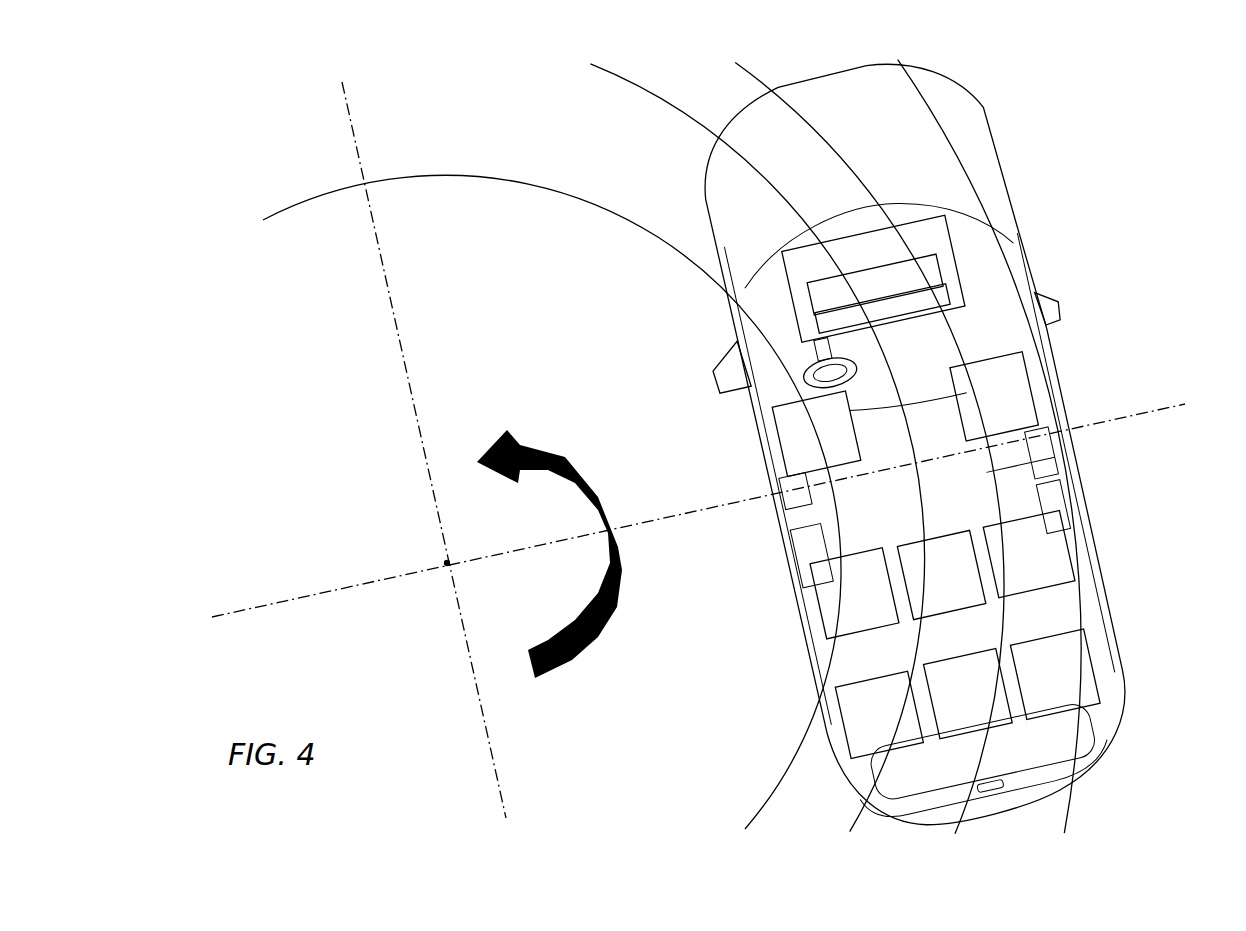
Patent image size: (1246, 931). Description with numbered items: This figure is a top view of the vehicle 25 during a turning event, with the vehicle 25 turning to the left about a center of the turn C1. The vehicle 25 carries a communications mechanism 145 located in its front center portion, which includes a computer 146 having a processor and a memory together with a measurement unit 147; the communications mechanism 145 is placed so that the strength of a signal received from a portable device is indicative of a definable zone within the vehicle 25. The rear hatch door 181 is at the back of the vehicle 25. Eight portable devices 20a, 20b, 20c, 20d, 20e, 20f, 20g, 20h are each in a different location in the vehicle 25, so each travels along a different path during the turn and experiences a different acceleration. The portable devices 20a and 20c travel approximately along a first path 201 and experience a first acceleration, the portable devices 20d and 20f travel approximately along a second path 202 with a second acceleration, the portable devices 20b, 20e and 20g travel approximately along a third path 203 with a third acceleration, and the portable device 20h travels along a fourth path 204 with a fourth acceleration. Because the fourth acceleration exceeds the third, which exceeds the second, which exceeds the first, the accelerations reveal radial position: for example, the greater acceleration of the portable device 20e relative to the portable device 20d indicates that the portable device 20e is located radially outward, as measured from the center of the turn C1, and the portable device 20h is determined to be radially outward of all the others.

The vehicle 25 is at (970, 90).
The communications mechanism 145 is at (933, 227).
The computer 146 is at (930, 270).
The measurement unit 147 is at (947, 290).
The portable device 20a is at (790, 463).
The portable device 20b is at (1015, 413).
The portable device 20c is at (827, 623).
The portable device 20d is at (940, 600).
The portable device 20e is at (1057, 573).
The portable device 20f is at (857, 740).
The portable device 20g is at (968, 717).
The portable device 20h is at (1070, 697).
The rear hatch door 181 is at (1063, 767).
The first path 201 is at (307, 197).
The second path 202 is at (650, 92).
The third path 203 is at (752, 72).
The fourth path 204 is at (937, 115).
The center of the turn C1 is at (447, 563).